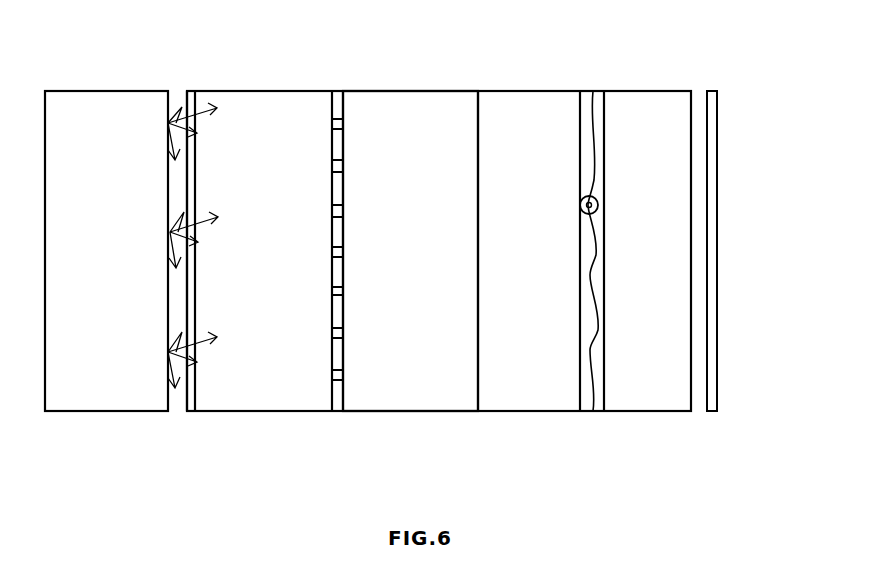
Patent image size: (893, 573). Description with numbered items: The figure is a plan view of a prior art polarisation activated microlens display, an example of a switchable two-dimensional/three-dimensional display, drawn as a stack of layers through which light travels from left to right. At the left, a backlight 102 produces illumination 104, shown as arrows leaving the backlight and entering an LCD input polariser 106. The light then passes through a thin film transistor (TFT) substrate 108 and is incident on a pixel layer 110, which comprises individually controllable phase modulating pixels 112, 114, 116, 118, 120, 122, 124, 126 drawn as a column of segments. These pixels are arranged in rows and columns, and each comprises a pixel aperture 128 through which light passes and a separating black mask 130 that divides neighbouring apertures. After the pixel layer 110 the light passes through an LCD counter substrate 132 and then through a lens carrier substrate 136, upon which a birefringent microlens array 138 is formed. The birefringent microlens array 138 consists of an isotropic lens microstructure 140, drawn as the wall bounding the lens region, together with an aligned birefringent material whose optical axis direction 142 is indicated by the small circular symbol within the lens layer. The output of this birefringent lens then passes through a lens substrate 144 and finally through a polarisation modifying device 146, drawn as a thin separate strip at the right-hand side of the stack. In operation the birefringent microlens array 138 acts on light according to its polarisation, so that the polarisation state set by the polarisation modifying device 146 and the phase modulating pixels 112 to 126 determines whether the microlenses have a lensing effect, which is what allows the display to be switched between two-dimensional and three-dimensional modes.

The backlight 102 is at (110, 411).
The illumination 104 is at (168, 125).
The LCD input polariser 106 is at (191, 411).
The thin film transistor (TFT) substrate 108 is at (268, 411).
The pixel layer 110 is at (340, 411).
The phase modulating pixel 112 is at (332, 112).
The phase modulating pixel 114 is at (332, 156).
The phase modulating pixel 116 is at (332, 199).
The phase modulating pixel 118 is at (332, 233).
The phase modulating pixel 120 is at (332, 273).
The phase modulating pixel 122 is at (332, 310).
The phase modulating pixel 124 is at (332, 344).
The phase modulating pixel 126 is at (332, 387).
The pixel aperture 128 is at (347, 105).
The separating black mask 130 is at (337, 127).
The LCD counter substrate 132 is at (412, 411).
The lens carrier substrate 136 is at (535, 411).
The birefringent microlens array 138 is at (593, 92).
The isotropic lens microstructure 140 is at (598, 411).
The optical axis direction 142 is at (580, 205).
The lens substrate 144 is at (637, 118).
The polarisation modifying device 146 is at (712, 411).